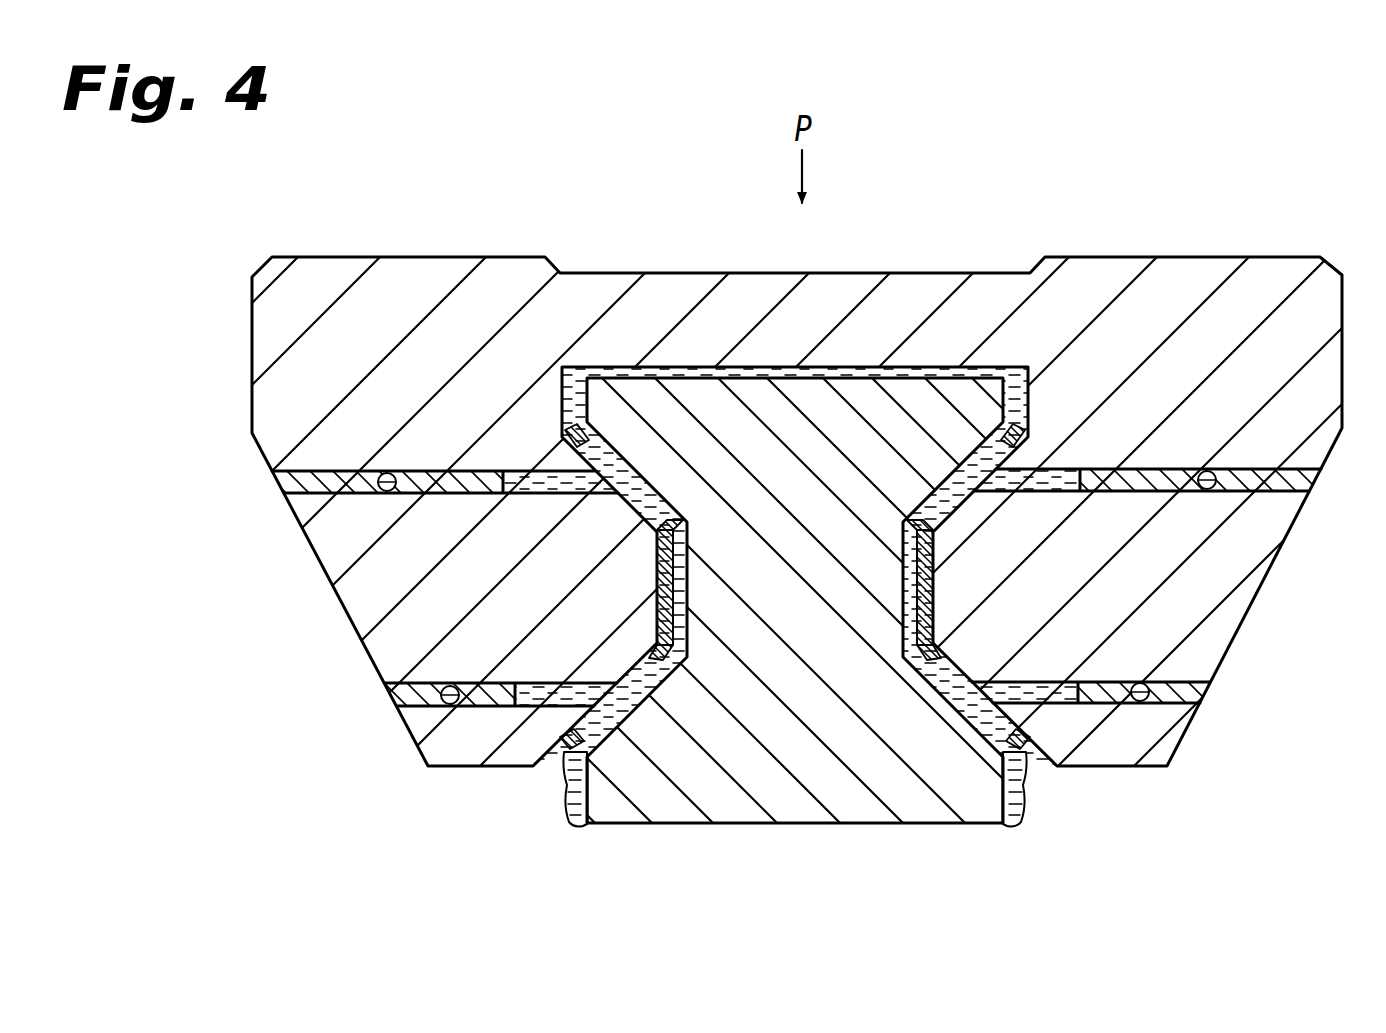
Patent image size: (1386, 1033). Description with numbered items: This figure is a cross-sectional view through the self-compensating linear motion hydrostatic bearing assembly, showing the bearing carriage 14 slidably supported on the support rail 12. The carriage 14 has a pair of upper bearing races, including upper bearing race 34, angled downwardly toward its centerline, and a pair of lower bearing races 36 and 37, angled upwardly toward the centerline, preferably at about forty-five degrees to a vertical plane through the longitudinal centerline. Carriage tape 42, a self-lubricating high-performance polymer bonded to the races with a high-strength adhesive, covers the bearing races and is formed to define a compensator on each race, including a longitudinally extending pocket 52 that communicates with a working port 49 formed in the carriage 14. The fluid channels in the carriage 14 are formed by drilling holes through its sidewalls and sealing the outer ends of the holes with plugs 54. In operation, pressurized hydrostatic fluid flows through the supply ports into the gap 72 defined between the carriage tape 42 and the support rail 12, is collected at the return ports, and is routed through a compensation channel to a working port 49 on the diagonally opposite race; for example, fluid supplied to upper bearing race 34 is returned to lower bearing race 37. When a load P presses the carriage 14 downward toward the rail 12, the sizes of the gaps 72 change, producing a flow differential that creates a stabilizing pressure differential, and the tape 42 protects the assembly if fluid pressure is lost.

The support rail 12 is at (747, 800).
The bearing carriage 14 is at (1218, 222).
The upper bearing race 34 is at (650, 495).
The lower bearing race 36 is at (573, 805).
The lower bearing race 37 is at (912, 705).
The carriage tape 42 is at (655, 548).
The working port 49 is at (603, 485).
The pocket 52 is at (577, 483).
The plug 54 is at (290, 484).
The gap 72 is at (665, 602).